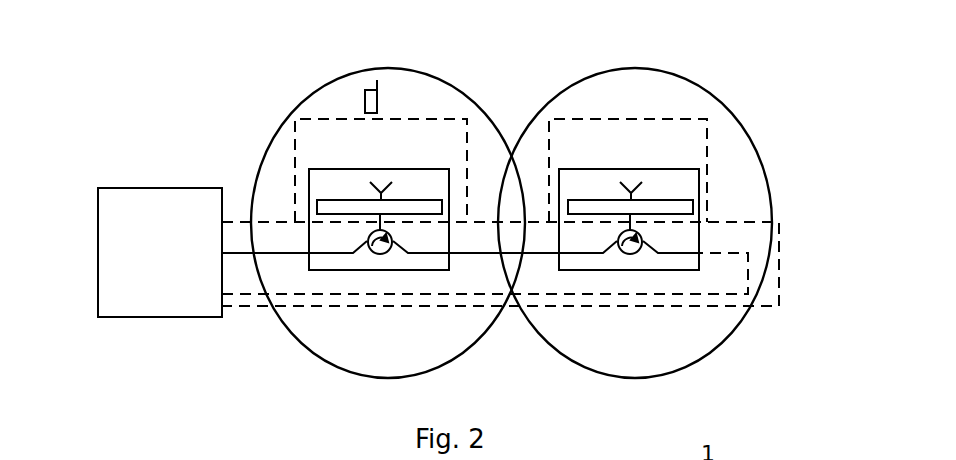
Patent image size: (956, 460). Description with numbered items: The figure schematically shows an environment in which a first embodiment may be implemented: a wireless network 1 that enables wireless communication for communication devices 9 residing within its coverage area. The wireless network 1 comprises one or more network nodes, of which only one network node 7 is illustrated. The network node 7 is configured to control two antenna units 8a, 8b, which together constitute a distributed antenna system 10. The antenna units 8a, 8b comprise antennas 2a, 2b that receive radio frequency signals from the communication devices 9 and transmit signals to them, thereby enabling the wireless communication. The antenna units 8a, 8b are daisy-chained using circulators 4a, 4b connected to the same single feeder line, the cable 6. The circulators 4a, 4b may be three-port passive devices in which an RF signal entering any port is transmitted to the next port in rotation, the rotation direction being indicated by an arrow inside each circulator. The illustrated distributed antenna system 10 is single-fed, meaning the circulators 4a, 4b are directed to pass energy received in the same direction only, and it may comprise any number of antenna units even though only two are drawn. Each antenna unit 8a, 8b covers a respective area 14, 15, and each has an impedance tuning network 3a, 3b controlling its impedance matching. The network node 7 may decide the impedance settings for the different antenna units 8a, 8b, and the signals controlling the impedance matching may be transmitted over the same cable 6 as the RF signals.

The wireless network 1 is at (532, 67).
The antenna 2a is at (388, 182).
The antenna 2b is at (638, 182).
The impedance tuning network 3a is at (410, 207).
The impedance tuning network 3b is at (660, 207).
The circulator 4a is at (388, 249).
The circulator 4b is at (638, 249).
The cable 6 is at (470, 254).
The network node 7 is at (108, 276).
The antenna unit 8a is at (451, 168).
The antenna unit 8b is at (688, 238).
The communication device 9 is at (378, 96).
The distributed antenna system 10 is at (780, 268).
The area 14 is at (317, 93).
The area 15 is at (720, 100).